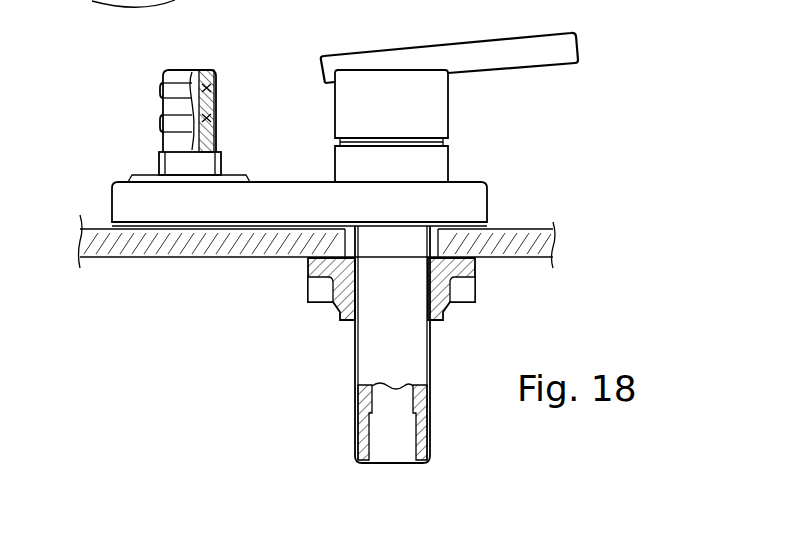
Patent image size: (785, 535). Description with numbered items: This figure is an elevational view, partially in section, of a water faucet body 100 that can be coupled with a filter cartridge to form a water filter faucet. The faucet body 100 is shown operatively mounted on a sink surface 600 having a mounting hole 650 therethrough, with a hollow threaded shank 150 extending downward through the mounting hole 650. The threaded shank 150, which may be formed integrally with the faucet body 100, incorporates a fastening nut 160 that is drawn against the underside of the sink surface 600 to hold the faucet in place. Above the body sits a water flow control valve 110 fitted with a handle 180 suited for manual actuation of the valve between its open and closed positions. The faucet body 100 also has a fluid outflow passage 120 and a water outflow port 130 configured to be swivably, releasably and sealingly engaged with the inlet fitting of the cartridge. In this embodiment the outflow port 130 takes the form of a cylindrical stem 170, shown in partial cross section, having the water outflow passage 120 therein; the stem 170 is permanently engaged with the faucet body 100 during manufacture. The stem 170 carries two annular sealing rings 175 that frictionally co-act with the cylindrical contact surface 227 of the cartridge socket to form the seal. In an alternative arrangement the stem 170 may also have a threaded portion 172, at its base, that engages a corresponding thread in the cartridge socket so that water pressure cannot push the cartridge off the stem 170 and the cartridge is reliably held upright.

The faucet body 100 is at (130, 201).
The water flow control valve 110 is at (414, 165).
The fluid outflow passage 120 is at (200, 80).
The water outflow port 130 is at (246, 111).
The hollow threaded shank 150 is at (378, 358).
The fastening nut 160 is at (463, 288).
The cylindrical stem 170 is at (141, 68).
The threaded portion 172 is at (192, 162).
The annular sealing rings 175 is at (217, 118).
The handle 180 is at (505, 53).
The cylindrical contact surface 227 is at (104, 6).
The sink surface 600 is at (190, 251).
The mounting hole 650 is at (347, 241).